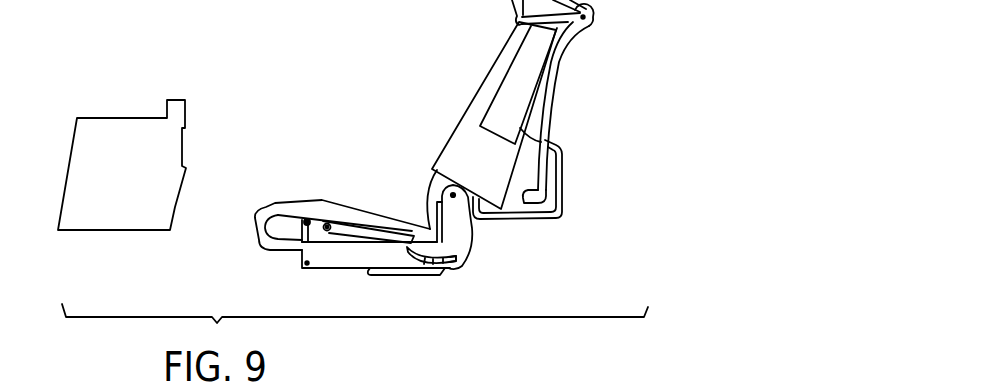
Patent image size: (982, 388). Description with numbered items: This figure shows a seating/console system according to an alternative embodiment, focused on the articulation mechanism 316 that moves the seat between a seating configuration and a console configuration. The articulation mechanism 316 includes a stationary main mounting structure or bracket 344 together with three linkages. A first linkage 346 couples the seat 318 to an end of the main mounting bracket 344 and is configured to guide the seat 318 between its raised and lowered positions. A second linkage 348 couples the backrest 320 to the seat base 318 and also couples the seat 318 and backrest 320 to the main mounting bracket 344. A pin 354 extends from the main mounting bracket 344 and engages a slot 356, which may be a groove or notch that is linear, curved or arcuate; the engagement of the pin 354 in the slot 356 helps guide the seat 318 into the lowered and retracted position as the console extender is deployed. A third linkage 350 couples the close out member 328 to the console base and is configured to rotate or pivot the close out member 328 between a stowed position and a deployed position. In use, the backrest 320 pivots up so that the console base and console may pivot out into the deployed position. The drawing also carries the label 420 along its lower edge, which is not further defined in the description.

The articulation mechanism 316 is at (308, 277).
The seat 318 is at (303, 203).
The backrest 320 is at (468, 105).
The close out member 328 is at (556, 99).
The main mounting bracket 344 is at (473, 238).
The first linkage 346 is at (299, 225).
The second linkage 348 is at (370, 227).
The third linkage 350 is at (567, 200).
The pin 354 is at (413, 252).
The slot 356 is at (457, 263).
The seat assembly 420 is at (516, 383).